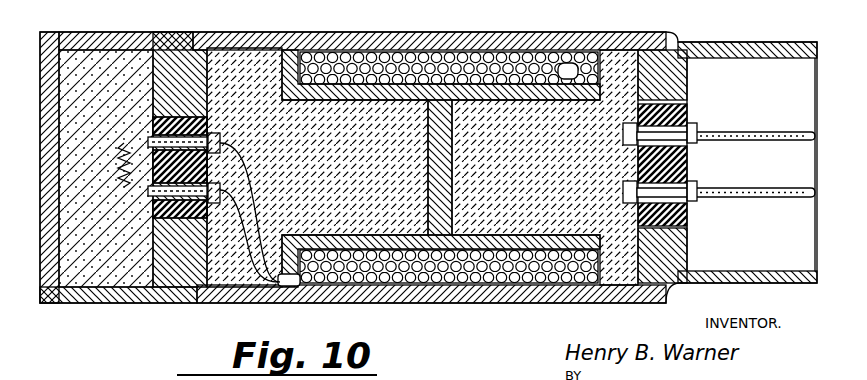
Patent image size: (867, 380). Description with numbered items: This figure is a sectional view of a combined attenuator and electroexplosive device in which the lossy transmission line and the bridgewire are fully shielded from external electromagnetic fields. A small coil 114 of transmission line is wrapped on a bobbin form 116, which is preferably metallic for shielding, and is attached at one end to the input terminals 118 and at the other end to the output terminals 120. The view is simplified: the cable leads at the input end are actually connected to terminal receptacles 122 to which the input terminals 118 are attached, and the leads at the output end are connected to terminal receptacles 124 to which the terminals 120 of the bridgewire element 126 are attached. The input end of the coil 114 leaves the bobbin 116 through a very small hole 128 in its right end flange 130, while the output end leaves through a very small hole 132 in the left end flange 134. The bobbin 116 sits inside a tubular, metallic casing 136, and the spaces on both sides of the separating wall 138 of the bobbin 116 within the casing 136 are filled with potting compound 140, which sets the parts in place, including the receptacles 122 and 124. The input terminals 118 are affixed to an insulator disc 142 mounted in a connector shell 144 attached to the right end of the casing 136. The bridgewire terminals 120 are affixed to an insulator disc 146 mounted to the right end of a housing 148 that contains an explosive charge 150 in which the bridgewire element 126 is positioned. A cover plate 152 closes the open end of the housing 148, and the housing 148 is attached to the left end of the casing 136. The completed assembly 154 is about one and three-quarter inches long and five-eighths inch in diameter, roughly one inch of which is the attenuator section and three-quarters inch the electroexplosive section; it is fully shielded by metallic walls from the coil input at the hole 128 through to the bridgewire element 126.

The transmission line coil 114 is at (382, 60).
The bobbin form 116 is at (278, 72).
The input terminals 118 is at (747, 141).
The output terminals 120 is at (140, 270).
The input terminal receptacles 122 is at (640, 100).
The output terminal receptacles 124 is at (214, 290).
The bridgewire element 126 is at (121, 290).
The hole in right end flange 128 is at (598, 52).
The right end flange 130 is at (592, 303).
The hole in left end flange 132 is at (292, 286).
The left end flange 134 is at (257, 290).
The tubular metallic casing 136 is at (397, 33).
The separating wall 138 is at (427, 185).
The potting compound 140 is at (307, 98).
The insulator disc 142 is at (697, 116).
The connector shell 144 is at (727, 42).
The insulator disc 146 is at (143, 300).
The housing 148 is at (166, 31).
The explosive charge 150 is at (88, 275).
The cover plate 152 is at (36, 265).
The completed assembly 154 is at (455, 23).